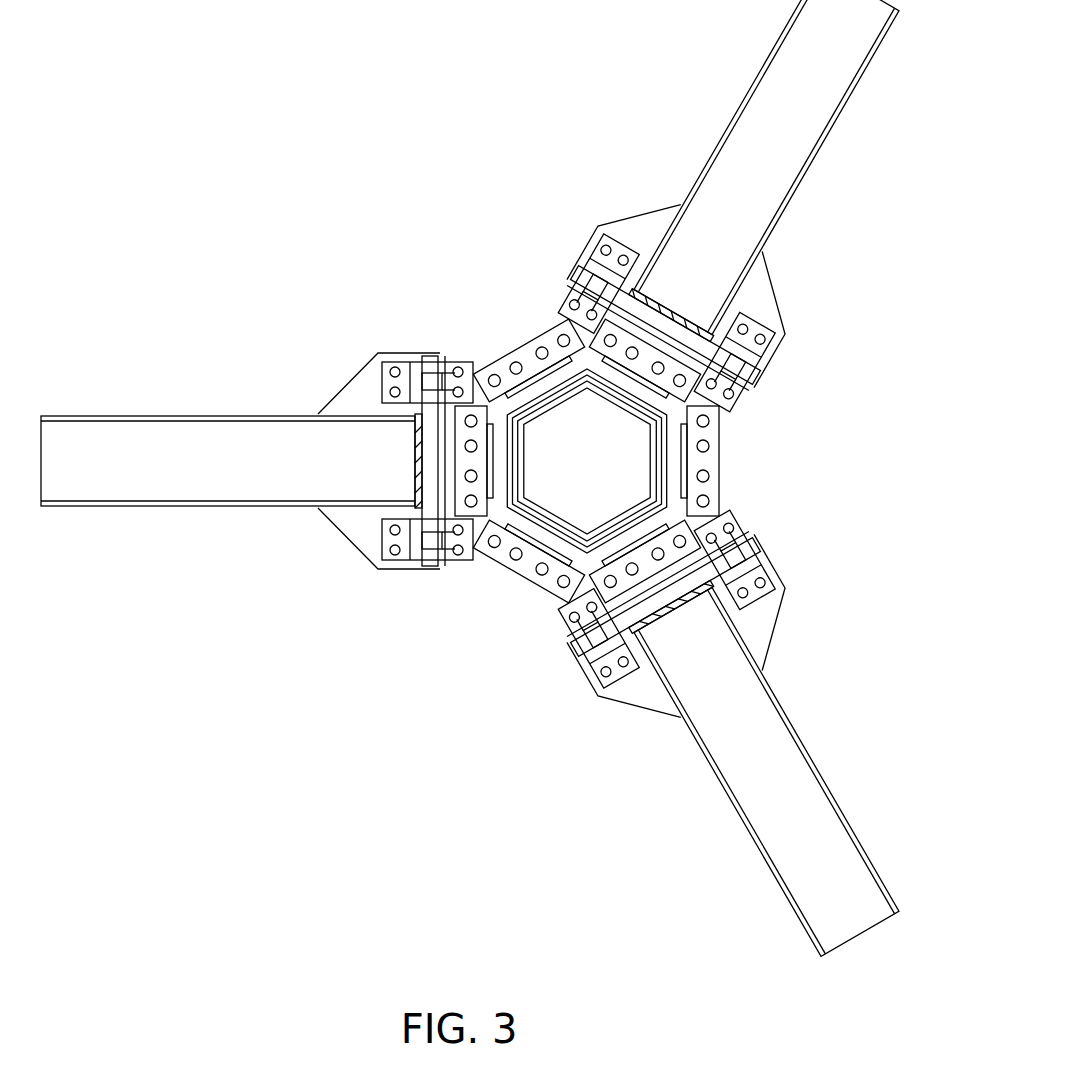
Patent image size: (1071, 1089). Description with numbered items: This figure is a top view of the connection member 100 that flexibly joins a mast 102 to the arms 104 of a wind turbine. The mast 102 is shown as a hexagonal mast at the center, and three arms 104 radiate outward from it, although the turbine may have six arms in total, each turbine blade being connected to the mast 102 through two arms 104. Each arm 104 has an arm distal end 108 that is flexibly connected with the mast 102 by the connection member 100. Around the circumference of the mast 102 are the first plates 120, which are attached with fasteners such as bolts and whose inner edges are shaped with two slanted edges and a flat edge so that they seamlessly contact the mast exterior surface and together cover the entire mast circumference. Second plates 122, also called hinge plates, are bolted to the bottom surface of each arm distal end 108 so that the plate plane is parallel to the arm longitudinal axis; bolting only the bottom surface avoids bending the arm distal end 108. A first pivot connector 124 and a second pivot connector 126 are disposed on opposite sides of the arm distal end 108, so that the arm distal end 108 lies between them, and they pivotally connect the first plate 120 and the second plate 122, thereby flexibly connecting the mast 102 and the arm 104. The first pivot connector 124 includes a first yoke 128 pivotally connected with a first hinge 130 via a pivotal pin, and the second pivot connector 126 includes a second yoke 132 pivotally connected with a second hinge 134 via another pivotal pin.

The connection member 100 is at (772, 441).
The mast 102 is at (613, 405).
The arm 104 is at (775, 83).
The arm distal end 108 is at (683, 297).
The first plate 120 is at (552, 323).
The second plate 122 is at (647, 228).
The first pivot connector 124 is at (562, 684).
The second pivot connector 126 is at (804, 511).
The first yoke 128 is at (563, 617).
The first hinge 130 is at (597, 643).
The second yoke 132 is at (740, 533).
The second hinge 134 is at (737, 565).